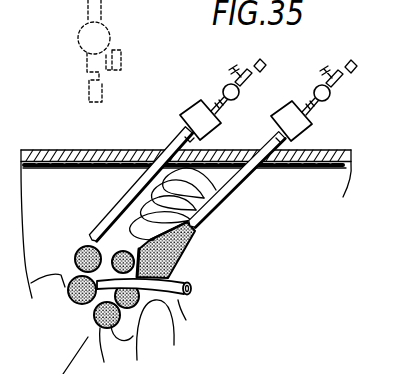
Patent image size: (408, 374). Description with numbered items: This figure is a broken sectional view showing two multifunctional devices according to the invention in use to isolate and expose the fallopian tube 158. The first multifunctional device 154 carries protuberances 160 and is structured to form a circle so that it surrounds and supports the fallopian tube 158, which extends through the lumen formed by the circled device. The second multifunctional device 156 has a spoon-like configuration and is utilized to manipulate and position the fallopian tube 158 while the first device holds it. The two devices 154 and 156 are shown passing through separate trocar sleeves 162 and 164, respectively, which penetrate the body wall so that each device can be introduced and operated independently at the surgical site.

The multifunctional device 154 is at (82, 246).
The multifunctional device 156 is at (186, 258).
The fallopian tube 158 is at (181, 298).
The protuberances 160 is at (78, 320).
The trocar sleeve 162 is at (178, 138).
The trocar sleeve 164 is at (239, 188).